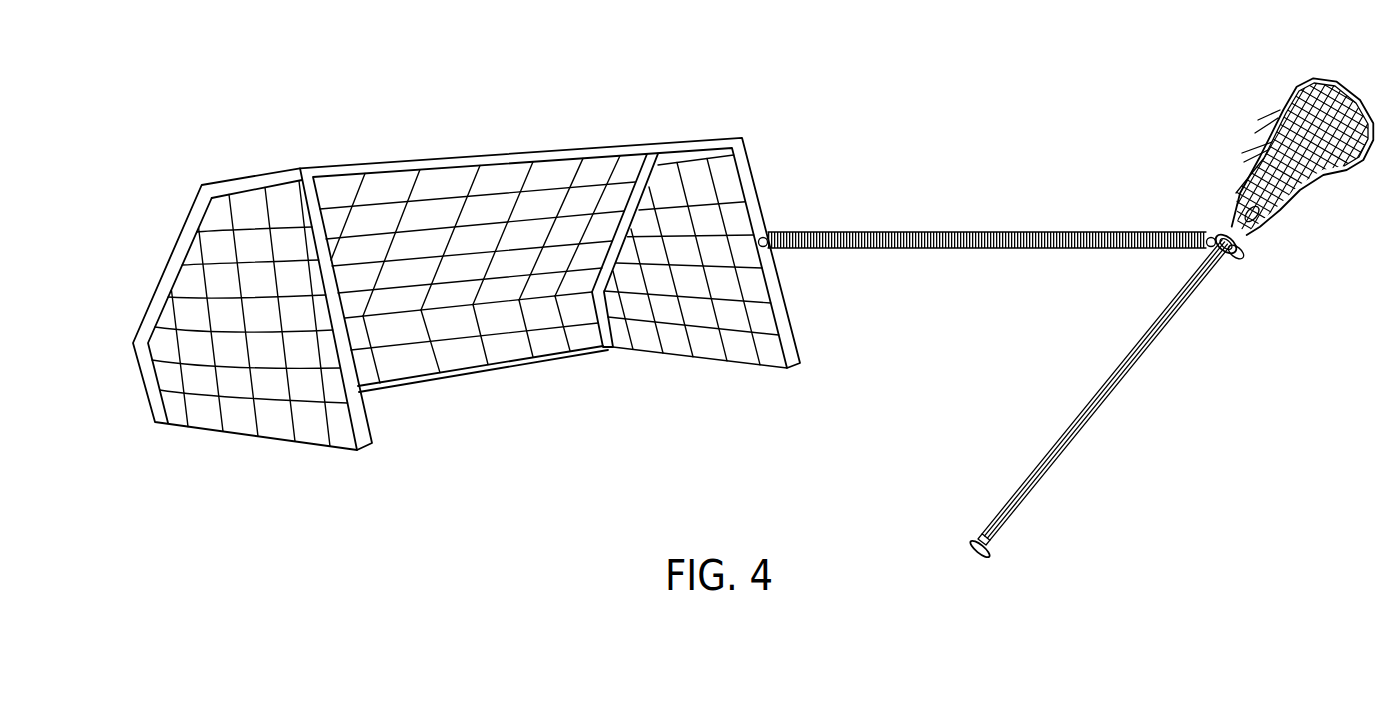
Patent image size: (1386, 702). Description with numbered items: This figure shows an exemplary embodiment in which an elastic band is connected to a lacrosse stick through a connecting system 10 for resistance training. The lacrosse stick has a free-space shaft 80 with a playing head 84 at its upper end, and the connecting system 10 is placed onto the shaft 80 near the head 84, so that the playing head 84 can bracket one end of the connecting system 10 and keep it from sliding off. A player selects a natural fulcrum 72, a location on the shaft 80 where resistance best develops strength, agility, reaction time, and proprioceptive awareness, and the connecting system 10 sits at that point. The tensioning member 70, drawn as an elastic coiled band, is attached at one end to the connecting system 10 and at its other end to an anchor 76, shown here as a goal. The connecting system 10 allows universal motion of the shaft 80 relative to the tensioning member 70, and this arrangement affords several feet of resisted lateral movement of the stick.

The anchor 76 is at (642, 138).
The tensioning member 70 is at (898, 231).
The connecting system 10 is at (1215, 230).
The natural fulcrum 72 is at (1249, 269).
The free-space shaft 80 is at (1130, 373).
The playing head 84 is at (1280, 110).